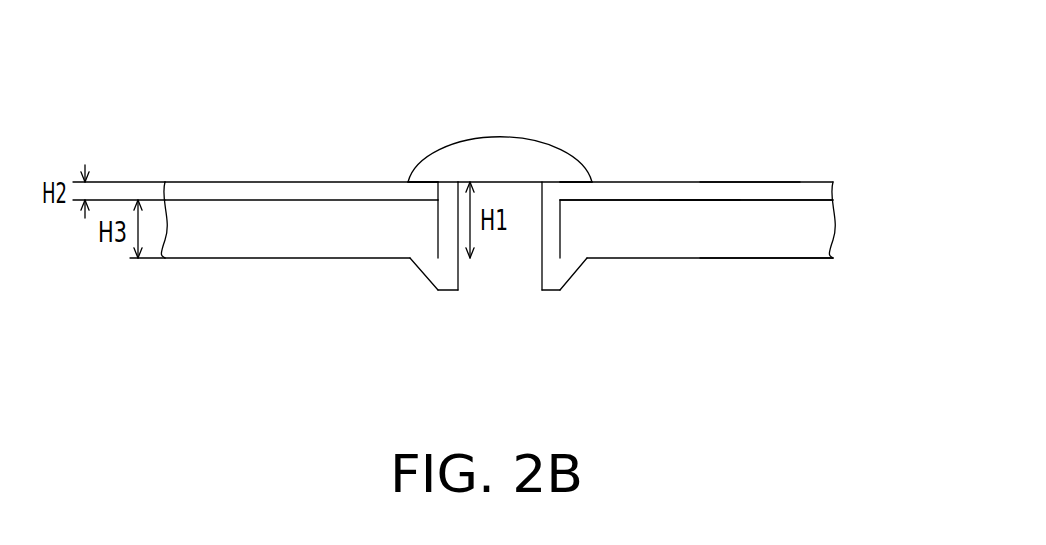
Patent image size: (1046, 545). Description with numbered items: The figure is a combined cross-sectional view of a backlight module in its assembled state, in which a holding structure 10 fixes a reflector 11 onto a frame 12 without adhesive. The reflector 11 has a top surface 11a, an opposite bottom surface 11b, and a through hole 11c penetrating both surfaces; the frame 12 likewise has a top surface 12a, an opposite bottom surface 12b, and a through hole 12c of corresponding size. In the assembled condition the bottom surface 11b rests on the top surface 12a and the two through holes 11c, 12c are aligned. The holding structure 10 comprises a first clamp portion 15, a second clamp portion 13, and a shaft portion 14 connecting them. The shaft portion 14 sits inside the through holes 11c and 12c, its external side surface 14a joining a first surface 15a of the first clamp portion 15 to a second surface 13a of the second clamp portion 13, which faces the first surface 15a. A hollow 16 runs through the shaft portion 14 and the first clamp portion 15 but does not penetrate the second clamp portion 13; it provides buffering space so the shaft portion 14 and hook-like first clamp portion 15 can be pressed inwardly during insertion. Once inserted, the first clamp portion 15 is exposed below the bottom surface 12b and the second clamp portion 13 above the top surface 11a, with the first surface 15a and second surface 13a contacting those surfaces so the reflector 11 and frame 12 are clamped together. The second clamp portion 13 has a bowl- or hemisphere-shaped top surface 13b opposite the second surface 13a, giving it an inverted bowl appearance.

The holding structure 10 is at (552, 143).
The reflector 11 is at (822, 190).
The top surface 11a is at (752, 180).
The bottom surface 11b is at (690, 190).
The through hole 11c is at (438, 192).
The frame 12 is at (822, 233).
The top surface 12a is at (728, 200).
The bottom surface 12b is at (803, 263).
The through hole 12c is at (438, 230).
The second clamp portion 13 is at (505, 148).
The second surface 13a is at (578, 183).
The top surface 13b is at (438, 148).
The shaft portion 14 is at (552, 228).
The external side surface 14a is at (558, 210).
The first clamp portion 15 is at (558, 273).
The first surface 15a is at (575, 262).
The hollow 16 is at (497, 265).